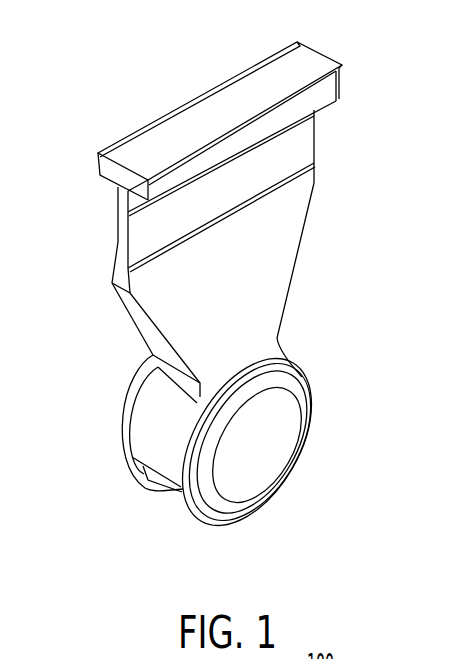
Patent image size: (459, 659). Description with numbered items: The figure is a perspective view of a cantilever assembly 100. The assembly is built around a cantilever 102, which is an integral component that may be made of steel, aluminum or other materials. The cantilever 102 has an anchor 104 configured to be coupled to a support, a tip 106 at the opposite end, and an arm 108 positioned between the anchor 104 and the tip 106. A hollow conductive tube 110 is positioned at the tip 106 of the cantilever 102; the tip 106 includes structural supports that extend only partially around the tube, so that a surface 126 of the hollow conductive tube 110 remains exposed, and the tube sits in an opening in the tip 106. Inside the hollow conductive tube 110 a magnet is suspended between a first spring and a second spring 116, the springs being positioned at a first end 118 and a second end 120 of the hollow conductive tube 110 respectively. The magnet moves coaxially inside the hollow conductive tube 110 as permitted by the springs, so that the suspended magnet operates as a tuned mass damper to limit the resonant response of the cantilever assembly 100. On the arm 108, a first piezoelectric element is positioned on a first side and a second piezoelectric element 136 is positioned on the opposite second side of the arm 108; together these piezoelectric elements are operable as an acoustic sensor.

The cantilever assembly 100 is at (162, 88).
The cantilever 102 is at (113, 136).
The anchor 104 is at (100, 167).
The tip 106 is at (132, 438).
The arm 108 is at (138, 315).
The hollow conductive tube 110 is at (313, 401).
The second spring 116 is at (278, 438).
The first end 118 is at (109, 482).
The second end 120 is at (197, 530).
The surface 126 is at (284, 514).
The second piezoelectric element 136 is at (318, 154).